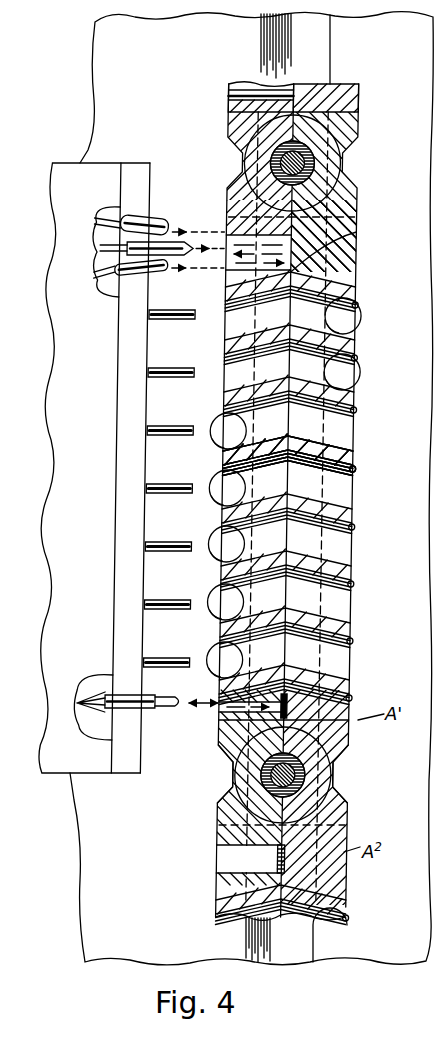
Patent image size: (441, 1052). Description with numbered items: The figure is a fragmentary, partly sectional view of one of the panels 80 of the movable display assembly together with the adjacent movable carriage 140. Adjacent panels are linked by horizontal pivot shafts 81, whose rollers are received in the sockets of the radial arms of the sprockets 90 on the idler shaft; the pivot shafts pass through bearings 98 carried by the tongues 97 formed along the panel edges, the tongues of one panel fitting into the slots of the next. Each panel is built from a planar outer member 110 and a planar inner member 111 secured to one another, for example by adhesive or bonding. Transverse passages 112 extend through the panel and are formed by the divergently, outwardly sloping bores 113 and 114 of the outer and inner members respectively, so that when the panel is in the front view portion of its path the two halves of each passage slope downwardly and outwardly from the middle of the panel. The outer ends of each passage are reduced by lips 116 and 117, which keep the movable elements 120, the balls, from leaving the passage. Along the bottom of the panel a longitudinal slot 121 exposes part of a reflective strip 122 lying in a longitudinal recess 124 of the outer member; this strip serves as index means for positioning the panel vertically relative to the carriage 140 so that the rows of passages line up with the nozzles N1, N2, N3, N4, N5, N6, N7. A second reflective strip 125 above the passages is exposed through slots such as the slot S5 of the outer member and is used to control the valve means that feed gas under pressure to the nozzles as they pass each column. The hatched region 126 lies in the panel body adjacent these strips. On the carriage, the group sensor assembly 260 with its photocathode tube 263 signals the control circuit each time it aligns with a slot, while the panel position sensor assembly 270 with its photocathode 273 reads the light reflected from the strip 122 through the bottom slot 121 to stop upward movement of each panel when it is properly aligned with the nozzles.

The panels 80 is at (370, 470).
The horizontal pivot shafts 81 is at (340, 174).
The sprockets 90 is at (346, 728).
The tongues 97 is at (348, 128).
The bearings 98 is at (272, 165).
The planar outer member 110 is at (228, 279).
The planar inner member 111 is at (346, 278).
The transverse passages 112 is at (232, 379).
The outwardly sloping bores 113 is at (226, 331).
The outwardly sloping bores 114 is at (354, 431).
The lip 116 is at (224, 443).
The lip 117 is at (356, 456).
The movable elements 120 is at (352, 372).
The bottom longitudinal slot 121 is at (228, 96).
The reflective strip 122 is at (338, 704).
The longitudinal recess 124 is at (310, 680).
The strip of reflective substance 125 is at (332, 240).
The curved passage 126 is at (340, 256).
The movable carriage 140 is at (85, 656).
The group sensor assembly 260 is at (172, 238).
The photocathode tube 263 is at (160, 236).
The panel position sensor assembly 270 is at (165, 712).
The photocathode 273 is at (174, 698).
The slot S5 is at (228, 236).
The nozzle N1 is at (186, 310).
The nozzle N2 is at (186, 368).
The nozzle N3 is at (186, 426).
The nozzle N4 is at (186, 484).
The nozzle N5 is at (186, 542).
The nozzle N6 is at (186, 600).
The nozzle N7 is at (186, 658).